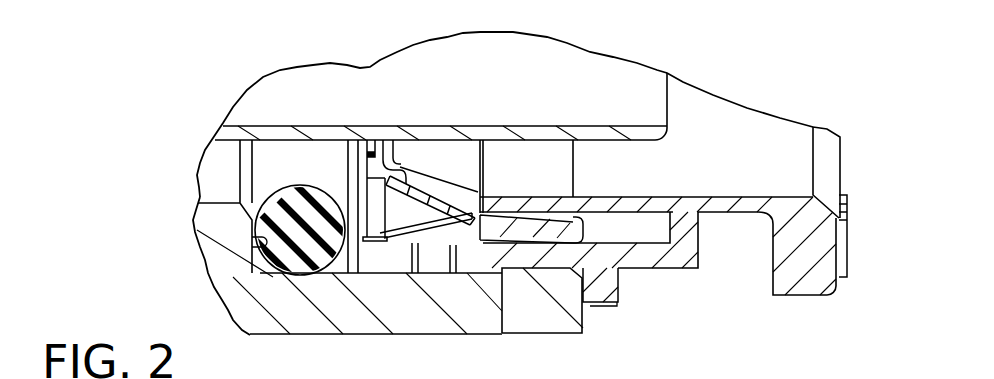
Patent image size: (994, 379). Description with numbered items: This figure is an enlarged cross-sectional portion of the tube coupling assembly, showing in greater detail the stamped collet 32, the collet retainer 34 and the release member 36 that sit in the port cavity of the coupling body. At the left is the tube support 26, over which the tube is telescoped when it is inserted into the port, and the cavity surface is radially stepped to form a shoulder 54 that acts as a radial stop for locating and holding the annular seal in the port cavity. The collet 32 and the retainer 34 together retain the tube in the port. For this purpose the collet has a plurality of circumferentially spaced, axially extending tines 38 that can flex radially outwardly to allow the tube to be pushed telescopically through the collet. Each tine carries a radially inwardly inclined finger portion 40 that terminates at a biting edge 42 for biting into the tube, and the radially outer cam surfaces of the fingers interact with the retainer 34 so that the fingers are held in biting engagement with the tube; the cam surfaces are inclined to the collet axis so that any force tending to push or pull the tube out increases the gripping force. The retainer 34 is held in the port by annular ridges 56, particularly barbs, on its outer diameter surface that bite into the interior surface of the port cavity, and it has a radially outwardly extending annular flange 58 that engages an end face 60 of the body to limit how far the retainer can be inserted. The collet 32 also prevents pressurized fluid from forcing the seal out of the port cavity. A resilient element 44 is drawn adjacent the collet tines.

The tube support 26 is at (672, 93).
The stamped collet 32 is at (426, 256).
The collet retainer 34 is at (660, 274).
The release member 36 is at (840, 286).
The tines 38 is at (433, 186).
The finger portion 40 is at (395, 250).
The biting edge 42 is at (381, 185).
The leaf spring 44 is at (412, 237).
The shoulder 54 is at (253, 262).
The annular ridges 56 is at (504, 272).
The annular flange 58 is at (618, 299).
The end face 60 is at (584, 321).